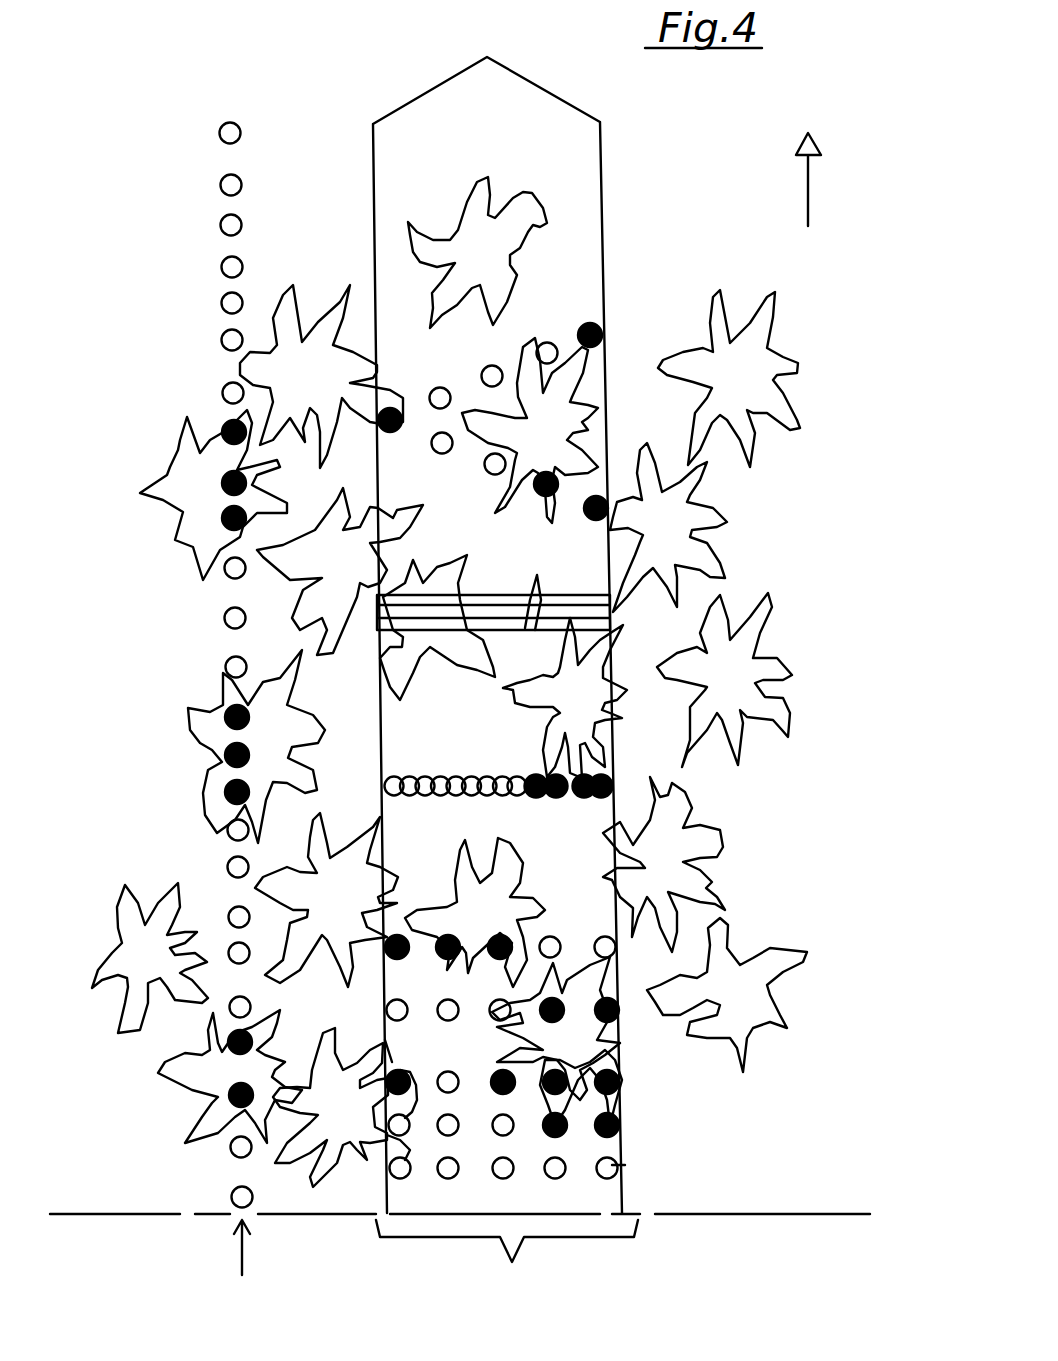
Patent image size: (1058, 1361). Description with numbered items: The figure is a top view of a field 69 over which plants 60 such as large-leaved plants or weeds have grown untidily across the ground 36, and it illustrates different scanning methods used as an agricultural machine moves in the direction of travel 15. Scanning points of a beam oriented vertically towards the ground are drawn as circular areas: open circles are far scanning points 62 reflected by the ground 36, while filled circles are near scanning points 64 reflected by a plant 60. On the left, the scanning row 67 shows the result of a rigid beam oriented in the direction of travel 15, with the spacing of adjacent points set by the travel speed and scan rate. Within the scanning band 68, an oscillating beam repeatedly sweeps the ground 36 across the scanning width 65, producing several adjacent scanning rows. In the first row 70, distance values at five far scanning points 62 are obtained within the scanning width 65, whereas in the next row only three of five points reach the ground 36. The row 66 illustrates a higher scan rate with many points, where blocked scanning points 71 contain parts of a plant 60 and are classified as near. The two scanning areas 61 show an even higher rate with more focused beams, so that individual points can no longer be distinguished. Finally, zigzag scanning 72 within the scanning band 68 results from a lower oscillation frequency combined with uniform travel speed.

The direction of travel 15 is at (808, 182).
The ground 36 is at (835, 550).
The plants 60 is at (783, 357).
The scanning areas 61 is at (521, 602).
The far scanning points 62 is at (228, 190).
The near scanning points 64 is at (228, 430).
The scanning width 65 is at (507, 1266).
The row 66 is at (531, 794).
The scanning row 67 is at (229, 1260).
The scanning band 68 is at (603, 211).
The field 69 is at (318, 163).
The first row 70 is at (624, 1165).
The blocked scanning points 71 is at (580, 800).
The zigzag scanning 72 is at (606, 328).